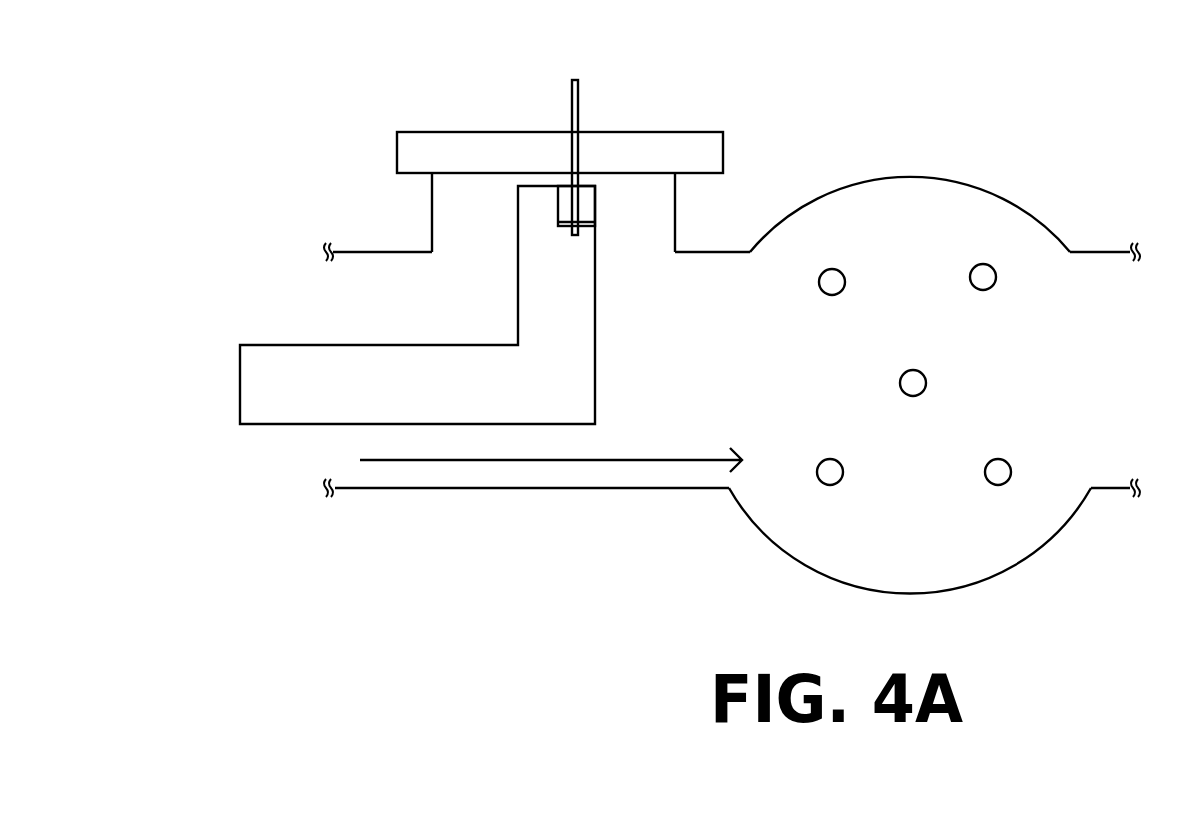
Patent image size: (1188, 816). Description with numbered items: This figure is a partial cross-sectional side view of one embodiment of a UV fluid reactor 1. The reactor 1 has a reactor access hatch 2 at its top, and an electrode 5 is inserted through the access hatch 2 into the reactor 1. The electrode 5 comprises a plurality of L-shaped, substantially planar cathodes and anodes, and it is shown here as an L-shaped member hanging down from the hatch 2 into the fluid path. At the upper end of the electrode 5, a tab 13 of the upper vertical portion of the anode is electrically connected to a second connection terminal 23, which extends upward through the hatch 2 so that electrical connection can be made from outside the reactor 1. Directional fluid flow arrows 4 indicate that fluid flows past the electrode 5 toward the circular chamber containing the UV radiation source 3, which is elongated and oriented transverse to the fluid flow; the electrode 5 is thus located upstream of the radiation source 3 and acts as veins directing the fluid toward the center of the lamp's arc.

The UV reactor 1 is at (978, 152).
The reactor access hatch 2 is at (500, 158).
The UV radiation source 3 is at (913, 373).
The directional fluid flow arrows 4 is at (551, 435).
The electrode 5 is at (277, 365).
The tab of upper vertical portion of anode 13 is at (595, 223).
The second connection terminal 23 is at (580, 97).